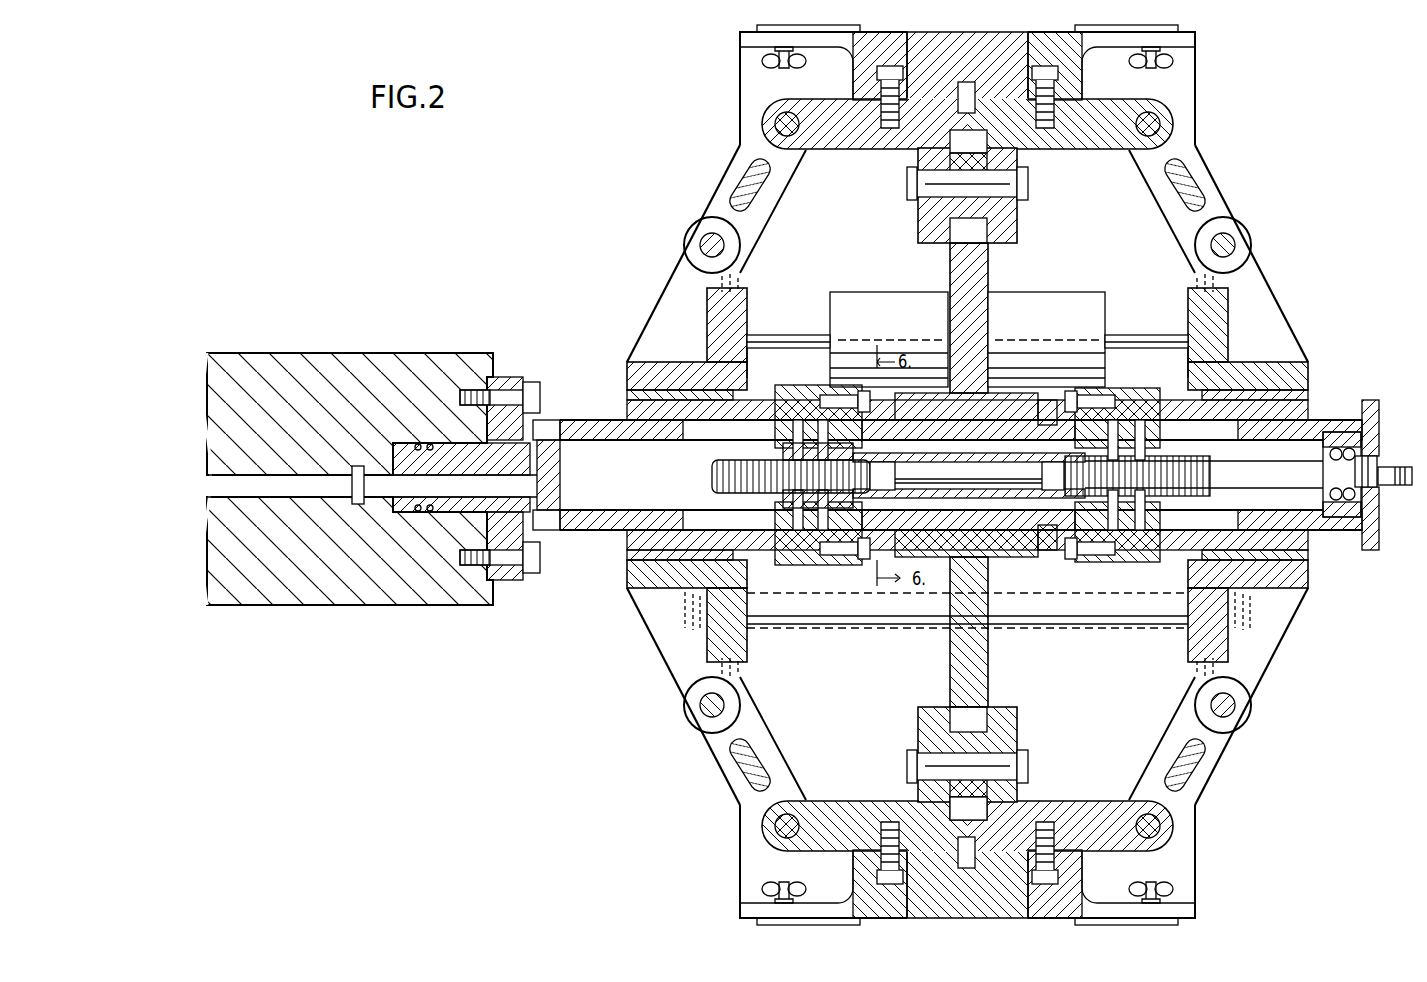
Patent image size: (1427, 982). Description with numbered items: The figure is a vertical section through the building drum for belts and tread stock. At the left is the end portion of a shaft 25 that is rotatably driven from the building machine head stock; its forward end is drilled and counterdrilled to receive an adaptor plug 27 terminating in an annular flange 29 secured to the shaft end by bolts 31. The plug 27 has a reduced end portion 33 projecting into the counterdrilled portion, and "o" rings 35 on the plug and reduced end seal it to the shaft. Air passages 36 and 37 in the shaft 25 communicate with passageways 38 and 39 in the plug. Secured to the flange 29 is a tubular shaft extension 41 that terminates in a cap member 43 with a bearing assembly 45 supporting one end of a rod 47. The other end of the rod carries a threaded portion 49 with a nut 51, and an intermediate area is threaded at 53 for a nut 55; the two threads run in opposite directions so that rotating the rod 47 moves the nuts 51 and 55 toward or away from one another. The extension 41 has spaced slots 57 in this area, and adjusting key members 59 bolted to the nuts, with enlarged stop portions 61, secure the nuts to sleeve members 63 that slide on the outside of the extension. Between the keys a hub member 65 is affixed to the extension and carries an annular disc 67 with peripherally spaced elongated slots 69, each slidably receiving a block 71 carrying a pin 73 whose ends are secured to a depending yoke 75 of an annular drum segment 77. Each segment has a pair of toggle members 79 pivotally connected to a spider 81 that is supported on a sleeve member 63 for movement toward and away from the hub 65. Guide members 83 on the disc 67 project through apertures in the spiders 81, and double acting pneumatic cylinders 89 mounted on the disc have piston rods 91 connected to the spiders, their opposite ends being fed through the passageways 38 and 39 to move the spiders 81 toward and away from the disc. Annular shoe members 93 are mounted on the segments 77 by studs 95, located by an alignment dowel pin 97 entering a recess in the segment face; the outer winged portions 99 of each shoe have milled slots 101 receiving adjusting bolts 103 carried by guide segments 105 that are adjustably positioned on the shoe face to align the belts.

The shaft 25 is at (318, 373).
The adaptor plug 27 is at (450, 452).
The annular flange 29 is at (497, 378).
The bolts 31 is at (530, 393).
The reduced end portion 33 is at (368, 492).
The "o" rings 35 is at (405, 500).
The air passage 36 is at (207, 475).
The air passage 37 is at (207, 499).
The passageway 38 is at (540, 428).
The passageway 39 is at (540, 545).
The tubular shaft extension 41 is at (600, 420).
The cap member 43 is at (1378, 412).
The bearing assembly 45 is at (1379, 450).
The rod 47 is at (1318, 530).
The threaded portion 49 is at (712, 477).
The nut 51 is at (783, 452).
The threaded portion 53 is at (1210, 478).
The nut 55 is at (1177, 455).
The slots 57 is at (710, 432).
The adjusting key members 59 is at (805, 420).
The enlarged stop portions 61 is at (825, 398).
The sleeve members 63 is at (762, 412).
The hub member 65 is at (1010, 400).
The annular disc 67 is at (990, 278).
The elongated slots 69 is at (1005, 802).
The block 71 is at (1000, 738).
The pin 73 is at (1020, 758).
The depending yoke 75 is at (930, 715).
The annular drum segment 77 is at (1095, 146).
The toggle members 79 is at (715, 193).
The spider 81 is at (665, 283).
The guide members 83 is at (1110, 626).
The double acting pneumatic cylinders 89 is at (872, 300).
The piston rods 91 is at (770, 338).
The shoe members 93 is at (940, 40).
The studs 95 is at (885, 45).
The alignment dowel pin 97 is at (972, 80).
The outer winged portions 99 is at (1080, 40).
The slots 101 is at (1200, 38).
The adjusting bolts 103 is at (1180, 60).
The guide segments 105 is at (1185, 28).